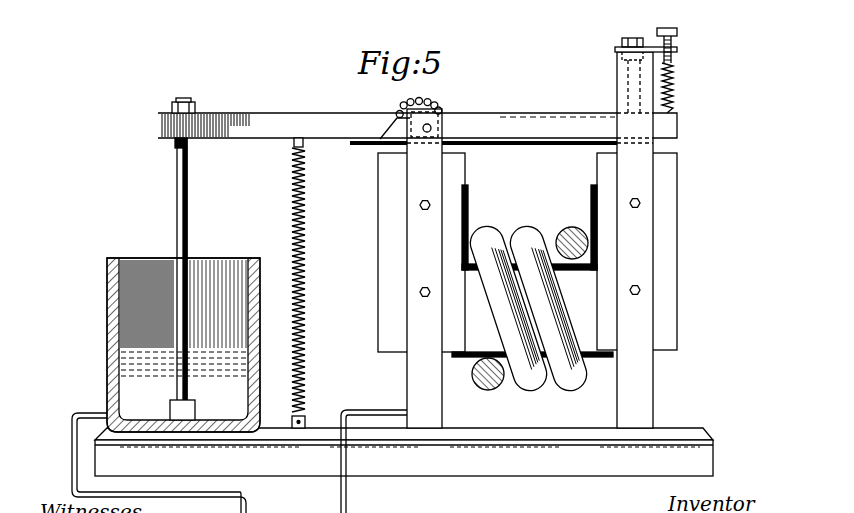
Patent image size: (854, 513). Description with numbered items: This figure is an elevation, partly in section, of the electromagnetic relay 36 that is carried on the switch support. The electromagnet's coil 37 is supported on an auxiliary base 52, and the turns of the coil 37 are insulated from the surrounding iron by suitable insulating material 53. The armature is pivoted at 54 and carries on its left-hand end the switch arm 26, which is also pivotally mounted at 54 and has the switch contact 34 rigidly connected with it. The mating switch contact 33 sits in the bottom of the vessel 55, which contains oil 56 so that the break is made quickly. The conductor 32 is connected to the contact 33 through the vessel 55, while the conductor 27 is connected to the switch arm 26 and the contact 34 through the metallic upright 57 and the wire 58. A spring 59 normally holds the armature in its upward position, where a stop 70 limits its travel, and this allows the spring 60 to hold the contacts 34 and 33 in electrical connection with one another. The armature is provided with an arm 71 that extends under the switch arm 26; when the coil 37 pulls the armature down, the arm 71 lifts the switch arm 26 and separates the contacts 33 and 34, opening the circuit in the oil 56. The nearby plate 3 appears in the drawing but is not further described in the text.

The plate 3 is at (523, 125).
The switch arm 26 is at (240, 126).
The conductor 27 is at (347, 500).
The conductor 32 is at (71, 443).
The switch contact 33 is at (187, 413).
The switch contact 34 is at (183, 195).
The electromagnetic relay 36 is at (388, 276).
The coil 37 is at (523, 240).
The auxiliary base 52 is at (517, 463).
The insulating material 53 is at (468, 205).
The pivot 54 is at (430, 126).
The vessel 55 is at (108, 315).
The oil 56 is at (132, 378).
The metallic upright 57 is at (420, 371).
The wire 58 is at (421, 104).
The spring 59 is at (673, 88).
The spring 60 is at (304, 270).
The stop 70 is at (623, 72).
The arm 71 is at (363, 146).